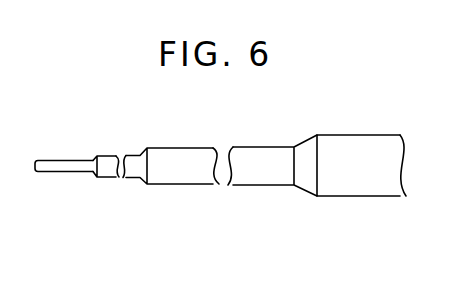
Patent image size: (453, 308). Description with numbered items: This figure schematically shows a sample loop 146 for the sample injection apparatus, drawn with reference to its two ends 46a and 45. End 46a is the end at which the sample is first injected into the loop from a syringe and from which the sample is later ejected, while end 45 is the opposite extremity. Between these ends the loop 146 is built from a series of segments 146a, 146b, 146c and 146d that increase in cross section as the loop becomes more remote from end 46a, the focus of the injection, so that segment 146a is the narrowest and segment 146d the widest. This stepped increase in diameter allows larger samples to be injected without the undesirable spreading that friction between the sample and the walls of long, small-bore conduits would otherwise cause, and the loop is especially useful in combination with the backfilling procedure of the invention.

The loop 146 is at (234, 225).
The segment 146a is at (63, 160).
The end 46a is at (72, 173).
The segment 146b is at (110, 155).
The segment 146c is at (188, 148).
The segment 146d is at (343, 135).
The end 45 is at (353, 197).